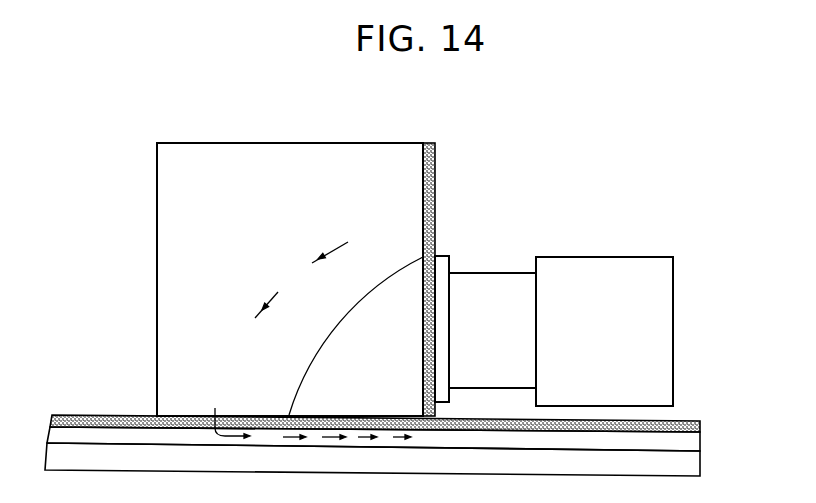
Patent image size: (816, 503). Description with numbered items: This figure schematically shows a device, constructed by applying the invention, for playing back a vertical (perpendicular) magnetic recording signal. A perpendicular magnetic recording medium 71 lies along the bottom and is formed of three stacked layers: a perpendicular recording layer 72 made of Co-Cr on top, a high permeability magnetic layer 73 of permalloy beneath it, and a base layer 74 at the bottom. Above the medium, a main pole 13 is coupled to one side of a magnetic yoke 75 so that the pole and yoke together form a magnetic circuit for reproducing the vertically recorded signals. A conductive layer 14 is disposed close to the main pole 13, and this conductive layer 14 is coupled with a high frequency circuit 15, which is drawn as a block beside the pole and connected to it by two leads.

The main pole 13 is at (437, 180).
The conductive layer 14 is at (450, 266).
The high frequency circuit 15 is at (675, 274).
The perpendicular magnetic recording medium 71 is at (398, 425).
The perpendicular recording layer 72 is at (702, 424).
The high permeability magnetic layer 73 is at (702, 447).
The base layer 74 is at (702, 470).
The magnetic yoke 75 is at (220, 143).